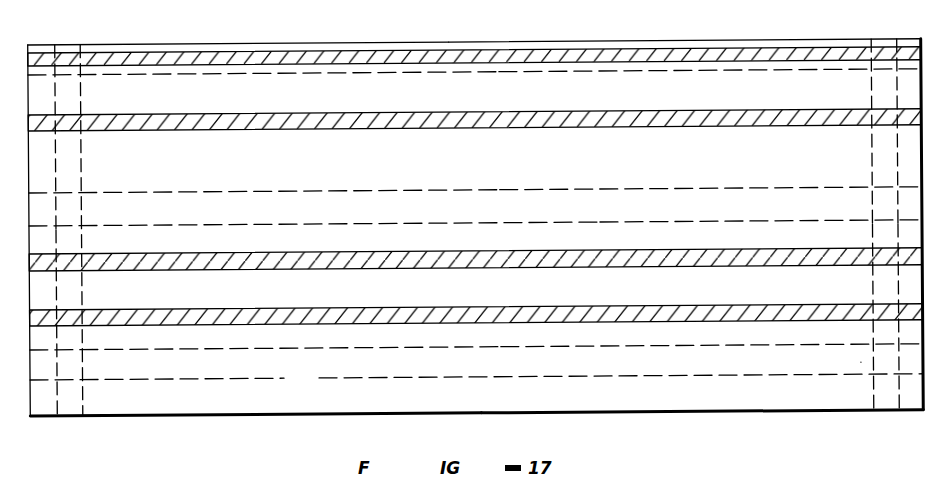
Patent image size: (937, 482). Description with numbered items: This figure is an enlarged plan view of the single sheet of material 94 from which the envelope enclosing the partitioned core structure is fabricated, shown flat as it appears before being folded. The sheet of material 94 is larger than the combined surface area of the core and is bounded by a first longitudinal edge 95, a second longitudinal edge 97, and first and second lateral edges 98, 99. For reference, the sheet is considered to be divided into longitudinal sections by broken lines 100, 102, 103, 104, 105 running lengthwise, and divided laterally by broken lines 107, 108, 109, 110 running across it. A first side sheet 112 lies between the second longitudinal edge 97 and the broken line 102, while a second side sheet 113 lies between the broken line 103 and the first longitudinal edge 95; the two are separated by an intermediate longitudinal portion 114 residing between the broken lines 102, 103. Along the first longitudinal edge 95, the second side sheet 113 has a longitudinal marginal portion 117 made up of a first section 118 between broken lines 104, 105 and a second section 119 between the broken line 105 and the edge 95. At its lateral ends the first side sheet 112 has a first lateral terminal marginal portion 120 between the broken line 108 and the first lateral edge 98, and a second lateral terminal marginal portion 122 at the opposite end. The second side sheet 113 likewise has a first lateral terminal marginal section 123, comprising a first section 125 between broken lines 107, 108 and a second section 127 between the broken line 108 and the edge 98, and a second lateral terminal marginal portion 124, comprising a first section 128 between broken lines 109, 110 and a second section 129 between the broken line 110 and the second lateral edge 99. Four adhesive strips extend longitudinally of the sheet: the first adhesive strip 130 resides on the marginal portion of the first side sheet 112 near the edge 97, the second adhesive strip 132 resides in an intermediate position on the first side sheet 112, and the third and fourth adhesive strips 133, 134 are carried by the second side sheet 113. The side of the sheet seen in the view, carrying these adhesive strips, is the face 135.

The sheet of material 94 is at (726, 416).
The first longitudinal edge 95 is at (264, 416).
The second longitudinal edge 97 is at (309, 45).
The first lateral edge 98 is at (30, 193).
The second lateral edge 99 is at (920, 193).
The broken line 100 is at (543, 77).
The broken line 102 is at (557, 193).
The broken line 103 is at (542, 226).
The broken line 104 is at (646, 354).
The broken line 105 is at (540, 45).
The broken line 107 is at (57, 406).
The broken line 108 is at (86, 400).
The broken line 109 is at (870, 393).
The broken line 110 is at (897, 387).
The first side sheet 112 is at (421, 176).
The second side sheet 113 is at (409, 295).
The intermediate longitudinal portion 114 is at (421, 216).
The longitudinal marginal portion 117 is at (316, 388).
The first section 118 is at (486, 371).
The second section 119 is at (486, 404).
The first lateral terminal marginal portion 120 is at (56, 79).
The second lateral terminal marginal portion 122 is at (893, 53).
The first lateral terminal marginal section 123 is at (80, 350).
The second lateral terminal marginal portion 124 is at (874, 354).
The first section 125 is at (80, 369).
The second section 127 is at (43, 404).
The first section 128 is at (882, 369).
The second section 129 is at (898, 383).
The first adhesive strip 130 is at (162, 56).
The second adhesive strip 132 is at (277, 116).
The third adhesive strip 133 is at (276, 256).
The fourth adhesive strip 134 is at (270, 311).
The face 135 is at (622, 88).